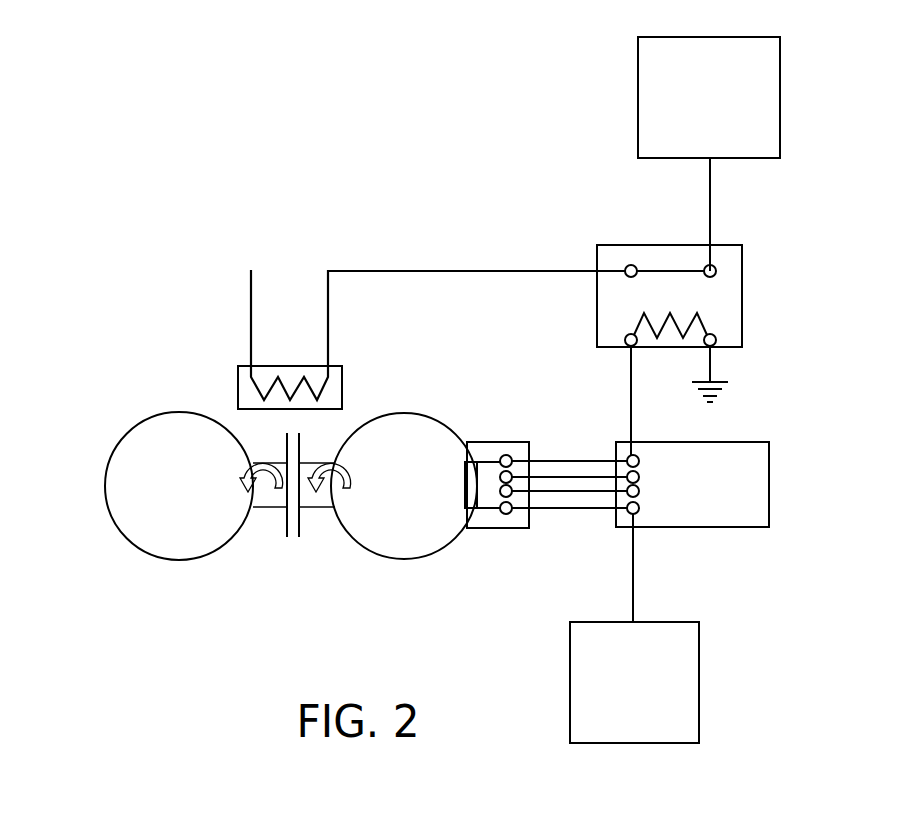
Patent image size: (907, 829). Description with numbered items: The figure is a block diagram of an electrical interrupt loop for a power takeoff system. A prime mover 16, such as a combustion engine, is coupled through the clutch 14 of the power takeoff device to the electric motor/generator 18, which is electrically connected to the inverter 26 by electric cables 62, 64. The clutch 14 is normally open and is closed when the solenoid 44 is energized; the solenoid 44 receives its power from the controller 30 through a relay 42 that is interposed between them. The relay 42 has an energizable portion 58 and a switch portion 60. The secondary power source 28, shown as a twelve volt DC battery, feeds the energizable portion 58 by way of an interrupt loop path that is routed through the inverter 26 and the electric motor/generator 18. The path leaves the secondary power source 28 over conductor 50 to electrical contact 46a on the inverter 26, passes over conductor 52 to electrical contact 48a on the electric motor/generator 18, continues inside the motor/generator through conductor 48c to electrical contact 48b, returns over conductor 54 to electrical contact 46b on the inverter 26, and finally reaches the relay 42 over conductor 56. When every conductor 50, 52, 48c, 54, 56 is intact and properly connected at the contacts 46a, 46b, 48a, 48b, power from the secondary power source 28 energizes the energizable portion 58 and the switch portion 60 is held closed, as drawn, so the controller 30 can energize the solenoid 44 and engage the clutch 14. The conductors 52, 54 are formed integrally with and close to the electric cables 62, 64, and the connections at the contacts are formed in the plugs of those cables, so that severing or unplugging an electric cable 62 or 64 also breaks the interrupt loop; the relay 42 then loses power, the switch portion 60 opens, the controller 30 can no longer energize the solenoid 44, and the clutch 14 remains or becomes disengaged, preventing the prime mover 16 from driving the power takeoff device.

The clutch 14 is at (291, 543).
The prime mover 16 is at (104, 461).
The electric motor/generator 18 is at (378, 545).
The inverter 26 is at (769, 466).
The secondary power source 28 is at (699, 684).
The controller 30 is at (780, 72).
The relay 42 is at (730, 290).
The solenoid 44 is at (343, 378).
The electrical contact 46a is at (639, 513).
The electrical contact 46b is at (639, 455).
The electrical contact 48a is at (504, 515).
The electrical contact 48b is at (508, 455).
The conductor 48c is at (463, 468).
The conductor 50 is at (633, 577).
The conductor 52 is at (556, 512).
The conductor 54 is at (562, 456).
The conductor 56 is at (630, 390).
The energizable portion 58 is at (703, 316).
The switch portion 60 is at (672, 268).
The electric cable 62 is at (592, 494).
The electric cable 64 is at (600, 474).